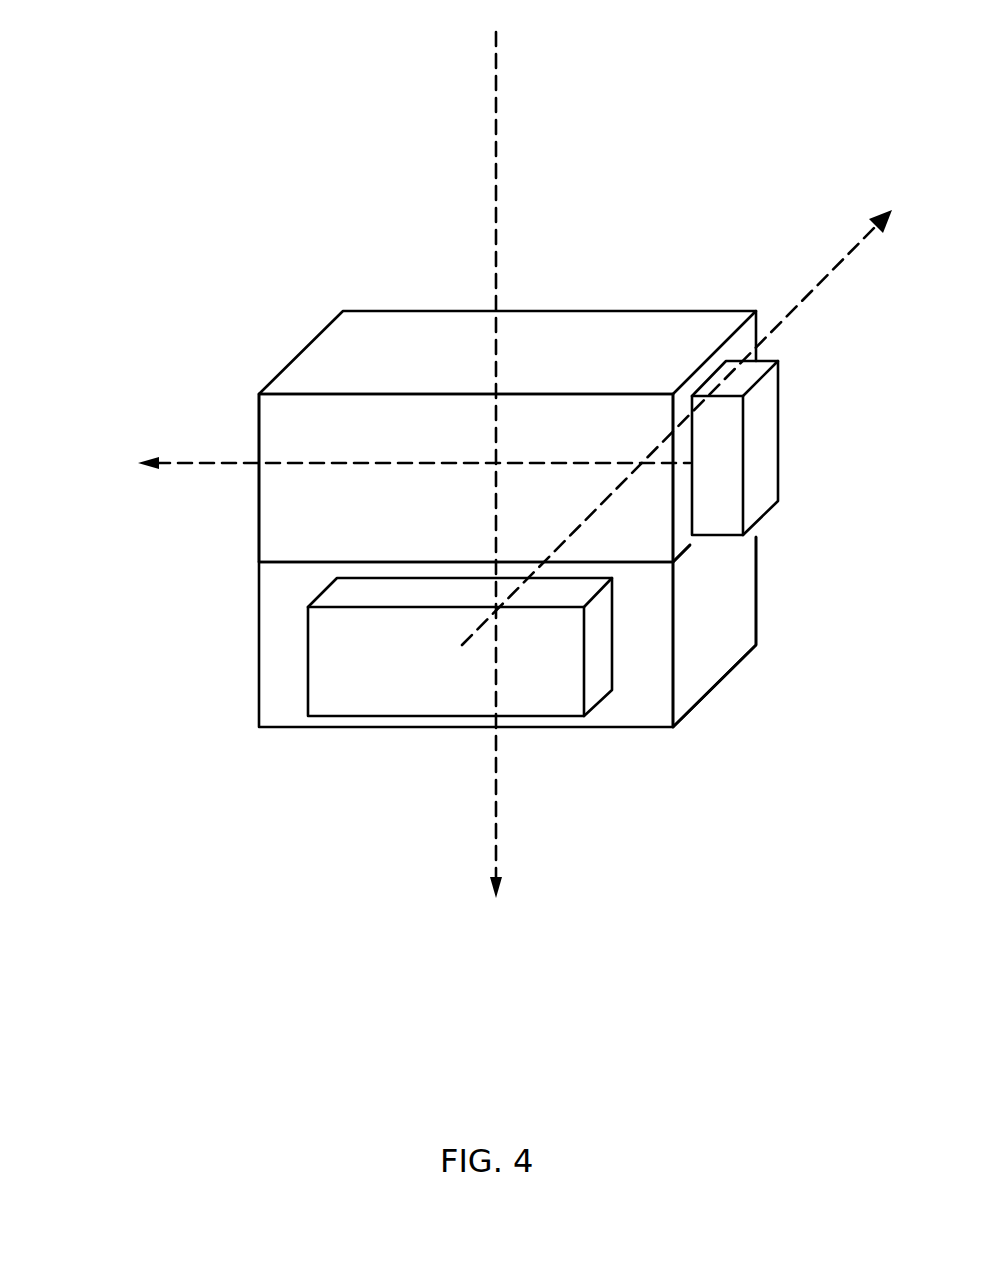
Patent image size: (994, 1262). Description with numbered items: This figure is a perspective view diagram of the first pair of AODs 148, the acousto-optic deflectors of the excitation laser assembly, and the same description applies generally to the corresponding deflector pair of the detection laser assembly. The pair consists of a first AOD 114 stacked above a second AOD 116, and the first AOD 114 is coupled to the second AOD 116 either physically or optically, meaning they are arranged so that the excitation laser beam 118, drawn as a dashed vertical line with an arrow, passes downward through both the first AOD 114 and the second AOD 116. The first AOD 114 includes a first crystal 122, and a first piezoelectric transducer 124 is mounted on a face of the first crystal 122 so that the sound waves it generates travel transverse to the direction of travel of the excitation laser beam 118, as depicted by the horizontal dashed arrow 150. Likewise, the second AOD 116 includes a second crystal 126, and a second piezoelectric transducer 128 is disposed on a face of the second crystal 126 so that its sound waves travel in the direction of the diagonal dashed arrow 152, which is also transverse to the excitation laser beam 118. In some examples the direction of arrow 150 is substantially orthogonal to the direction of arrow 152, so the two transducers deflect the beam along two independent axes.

The first pair of AODs 148 is at (141, 178).
The first AOD 114 is at (361, 310).
The second AOD 116 is at (259, 663).
The excitation laser beam 118 is at (495, 127).
The first crystal 122 is at (479, 443).
The first piezoelectric transducer 124 is at (753, 453).
The second crystal 126 is at (714, 632).
The second piezoelectric transducer 128 is at (472, 679).
The arrow 150 is at (223, 460).
The arrow 152 is at (808, 293).